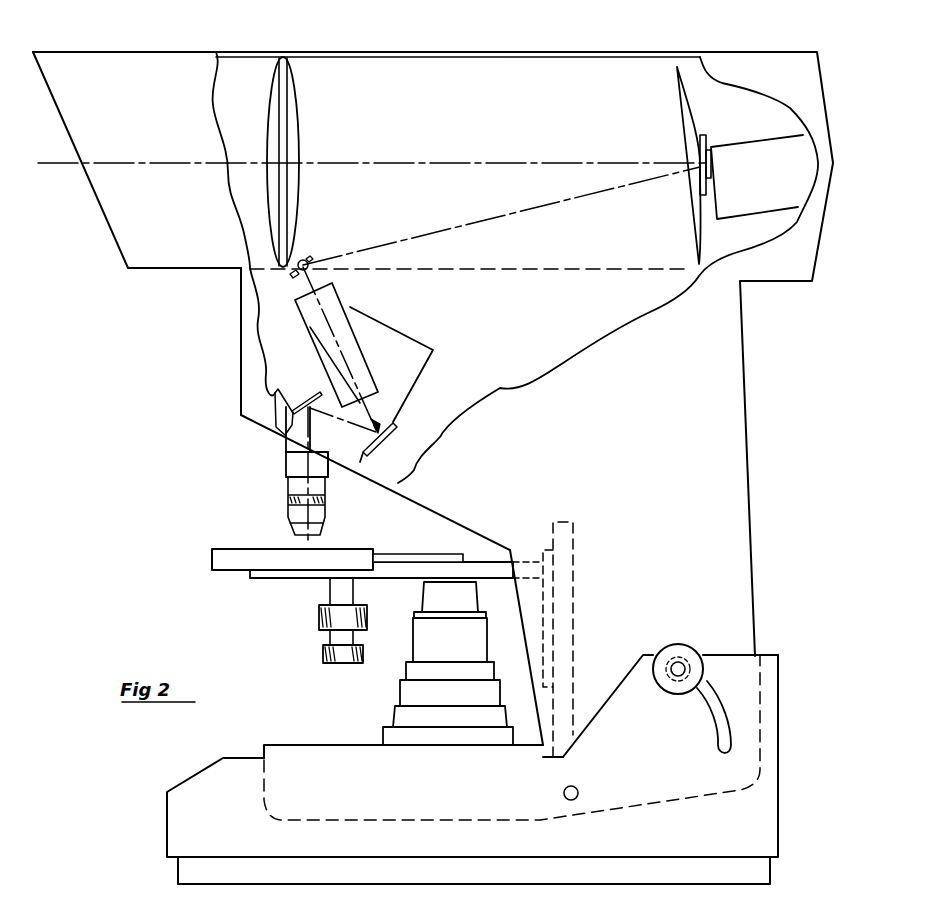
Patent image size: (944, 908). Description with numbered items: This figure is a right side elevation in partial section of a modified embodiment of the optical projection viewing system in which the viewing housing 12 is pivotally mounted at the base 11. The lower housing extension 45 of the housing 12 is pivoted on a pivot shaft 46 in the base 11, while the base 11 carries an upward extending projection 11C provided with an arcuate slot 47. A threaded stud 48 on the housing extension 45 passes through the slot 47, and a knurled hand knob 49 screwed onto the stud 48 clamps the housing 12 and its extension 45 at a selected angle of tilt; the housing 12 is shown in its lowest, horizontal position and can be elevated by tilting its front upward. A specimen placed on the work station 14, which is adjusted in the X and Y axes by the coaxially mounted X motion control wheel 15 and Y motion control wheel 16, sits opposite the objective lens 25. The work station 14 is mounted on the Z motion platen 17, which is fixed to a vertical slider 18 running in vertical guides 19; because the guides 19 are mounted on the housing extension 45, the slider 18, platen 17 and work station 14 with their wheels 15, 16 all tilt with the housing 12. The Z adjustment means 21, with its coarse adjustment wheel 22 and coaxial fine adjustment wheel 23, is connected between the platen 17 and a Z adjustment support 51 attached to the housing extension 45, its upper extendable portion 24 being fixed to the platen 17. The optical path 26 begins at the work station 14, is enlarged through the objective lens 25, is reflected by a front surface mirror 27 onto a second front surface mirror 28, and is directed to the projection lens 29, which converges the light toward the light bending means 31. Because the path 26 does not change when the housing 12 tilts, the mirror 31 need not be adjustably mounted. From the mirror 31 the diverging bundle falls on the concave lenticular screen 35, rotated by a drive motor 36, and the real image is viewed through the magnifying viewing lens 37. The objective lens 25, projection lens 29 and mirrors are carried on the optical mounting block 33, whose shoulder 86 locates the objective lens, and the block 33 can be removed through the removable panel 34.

The base 11 is at (729, 841).
The upward extending projection 11C is at (657, 733).
The viewing housing 12 is at (612, 52).
The work station 14 is at (222, 549).
The X motion control wheel 15 is at (322, 655).
The Y motion control wheel 16 is at (318, 618).
The Z motion platen 17 is at (266, 580).
The vertical slider 18 is at (543, 548).
The vertical guides 19 is at (574, 561).
The Z adjustment means 21 is at (366, 683).
The coarse adjustment wheel 22 is at (380, 735).
The fine adjustment wheel 23 is at (398, 700).
The upper extendable portion 24 is at (423, 600).
The objective lens 25 is at (290, 503).
The optical path 26 is at (450, 163).
The front surface mirror 27 is at (280, 436).
The second front surface mirror 28 is at (388, 422).
The projection lens 29 is at (340, 300).
The light bending means 31 is at (307, 258).
The optical mounting block 33 is at (405, 332).
The removable panel 34 is at (240, 340).
The lenticular screen 35 is at (690, 117).
The drive motor 36 is at (771, 189).
The magnifying viewing lens 37 is at (285, 113).
The housing extension 45 is at (636, 444).
The pivot shaft 46 is at (563, 795).
The arcuate slot 47 is at (712, 729).
The threaded stud 48 is at (678, 662).
The knurled hand knob 49 is at (663, 648).
The Z adjustment support 51 is at (280, 745).
The shoulder 86 is at (330, 486).